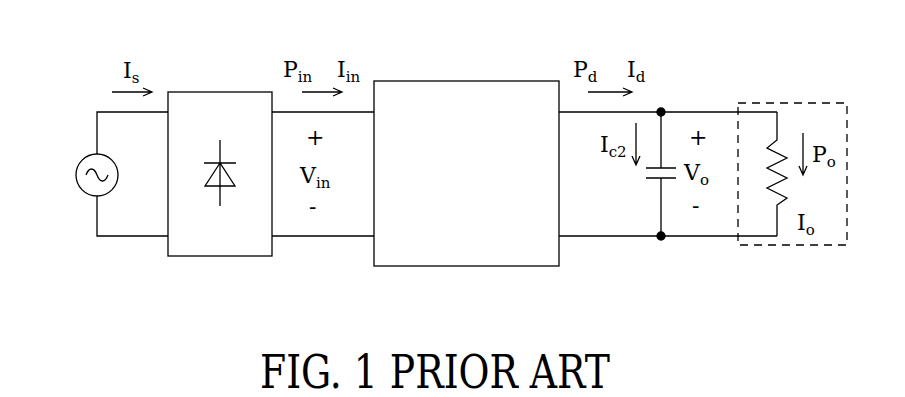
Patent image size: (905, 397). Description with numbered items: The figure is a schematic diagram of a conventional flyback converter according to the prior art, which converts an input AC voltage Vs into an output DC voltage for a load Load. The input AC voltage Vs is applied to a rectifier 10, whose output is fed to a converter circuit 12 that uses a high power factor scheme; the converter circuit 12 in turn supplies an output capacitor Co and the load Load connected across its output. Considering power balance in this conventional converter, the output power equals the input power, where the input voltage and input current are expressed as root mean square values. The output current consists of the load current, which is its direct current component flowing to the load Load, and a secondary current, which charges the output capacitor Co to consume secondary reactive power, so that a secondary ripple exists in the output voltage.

The rectifier 10 is at (222, 92).
The converter circuit 12 is at (467, 80).
The input AC voltage Vs is at (76, 172).
The output capacitor Co is at (648, 174).
The load Load is at (800, 247).